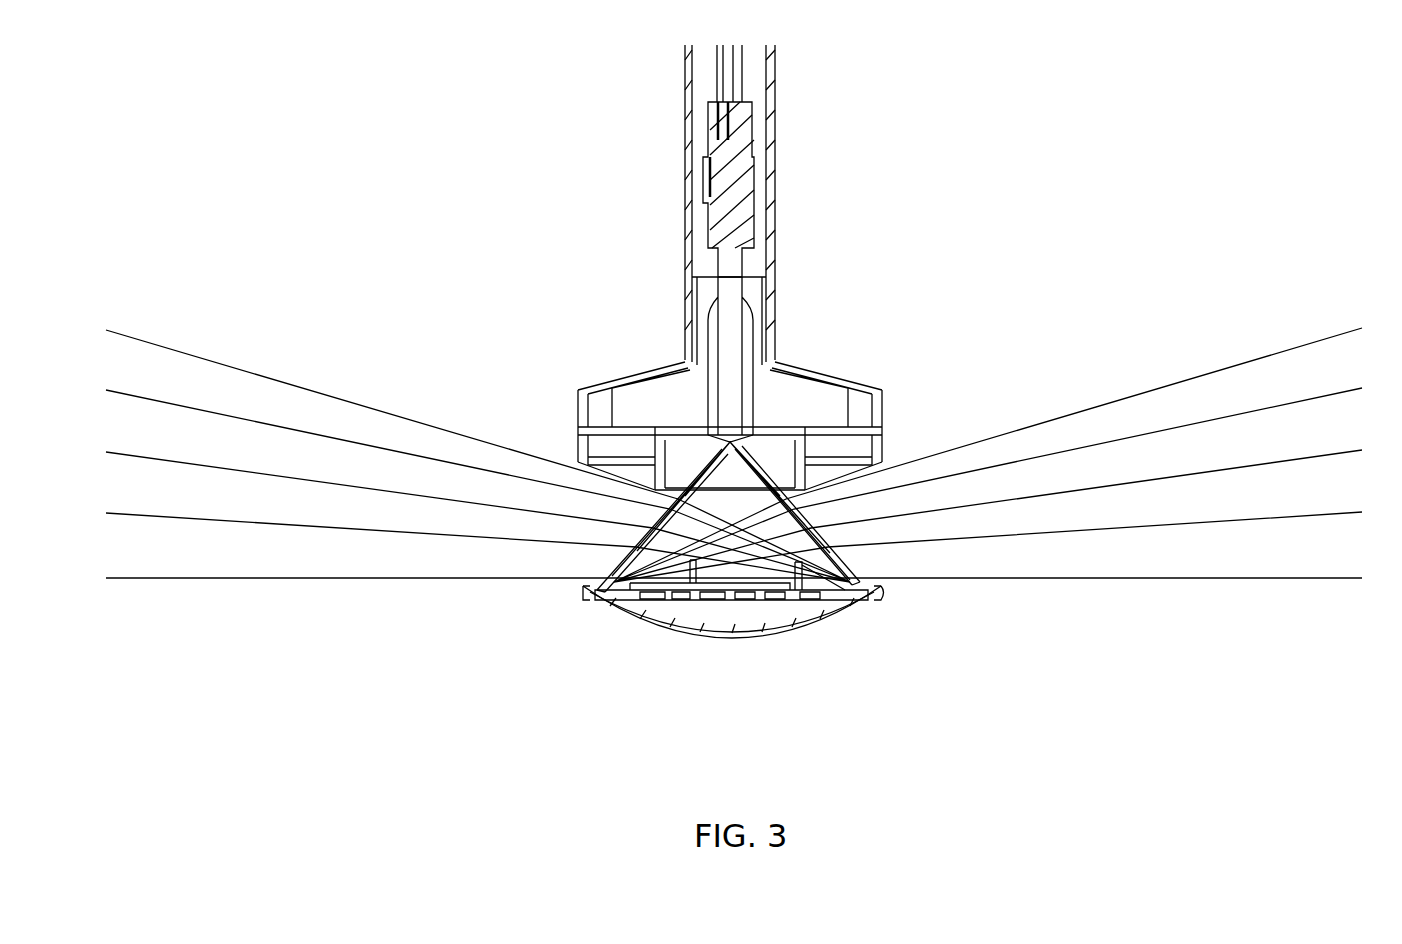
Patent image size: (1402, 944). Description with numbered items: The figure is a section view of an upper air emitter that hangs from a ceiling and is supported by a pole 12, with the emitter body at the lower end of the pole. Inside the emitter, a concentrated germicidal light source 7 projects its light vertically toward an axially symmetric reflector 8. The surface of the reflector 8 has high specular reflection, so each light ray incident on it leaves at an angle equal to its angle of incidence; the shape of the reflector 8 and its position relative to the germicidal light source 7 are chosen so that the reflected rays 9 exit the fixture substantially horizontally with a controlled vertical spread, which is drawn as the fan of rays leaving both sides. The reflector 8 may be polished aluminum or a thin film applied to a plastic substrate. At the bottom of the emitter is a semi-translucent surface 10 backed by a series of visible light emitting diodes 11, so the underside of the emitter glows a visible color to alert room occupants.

The pole 12 is at (784, 114).
The germicidal light source 7 is at (732, 440).
The reflector 8 is at (663, 551).
The reflected rays 9 is at (1170, 448).
The surface 10 is at (813, 637).
The visible light emitting diodes 11 is at (728, 603).